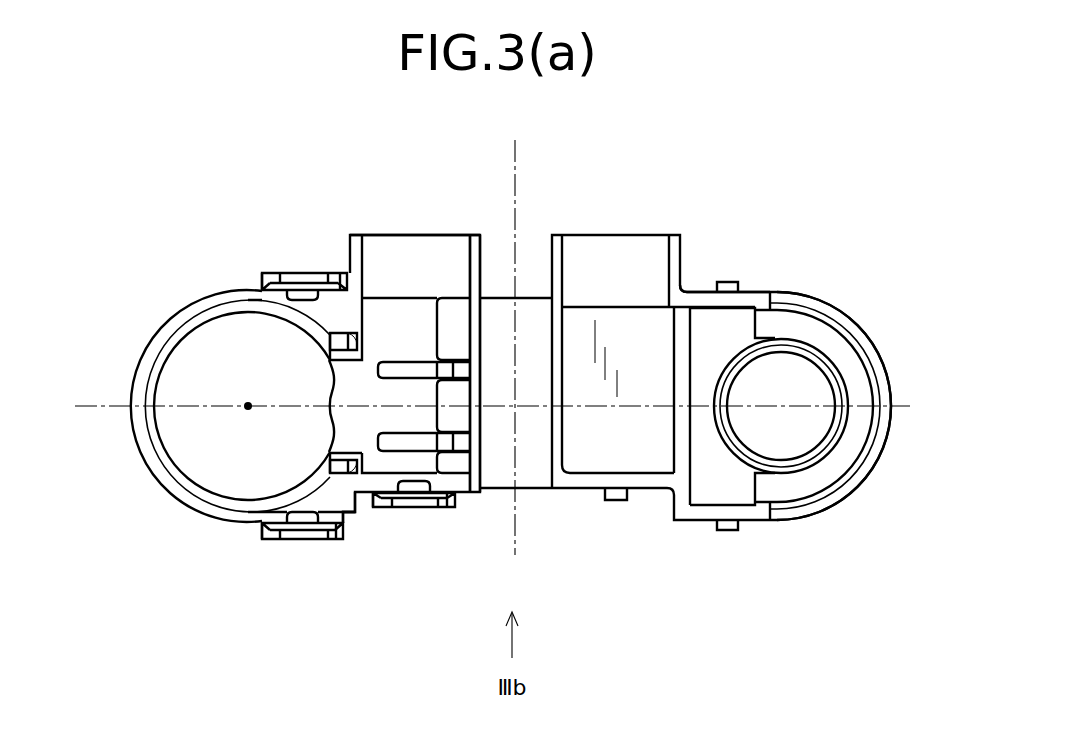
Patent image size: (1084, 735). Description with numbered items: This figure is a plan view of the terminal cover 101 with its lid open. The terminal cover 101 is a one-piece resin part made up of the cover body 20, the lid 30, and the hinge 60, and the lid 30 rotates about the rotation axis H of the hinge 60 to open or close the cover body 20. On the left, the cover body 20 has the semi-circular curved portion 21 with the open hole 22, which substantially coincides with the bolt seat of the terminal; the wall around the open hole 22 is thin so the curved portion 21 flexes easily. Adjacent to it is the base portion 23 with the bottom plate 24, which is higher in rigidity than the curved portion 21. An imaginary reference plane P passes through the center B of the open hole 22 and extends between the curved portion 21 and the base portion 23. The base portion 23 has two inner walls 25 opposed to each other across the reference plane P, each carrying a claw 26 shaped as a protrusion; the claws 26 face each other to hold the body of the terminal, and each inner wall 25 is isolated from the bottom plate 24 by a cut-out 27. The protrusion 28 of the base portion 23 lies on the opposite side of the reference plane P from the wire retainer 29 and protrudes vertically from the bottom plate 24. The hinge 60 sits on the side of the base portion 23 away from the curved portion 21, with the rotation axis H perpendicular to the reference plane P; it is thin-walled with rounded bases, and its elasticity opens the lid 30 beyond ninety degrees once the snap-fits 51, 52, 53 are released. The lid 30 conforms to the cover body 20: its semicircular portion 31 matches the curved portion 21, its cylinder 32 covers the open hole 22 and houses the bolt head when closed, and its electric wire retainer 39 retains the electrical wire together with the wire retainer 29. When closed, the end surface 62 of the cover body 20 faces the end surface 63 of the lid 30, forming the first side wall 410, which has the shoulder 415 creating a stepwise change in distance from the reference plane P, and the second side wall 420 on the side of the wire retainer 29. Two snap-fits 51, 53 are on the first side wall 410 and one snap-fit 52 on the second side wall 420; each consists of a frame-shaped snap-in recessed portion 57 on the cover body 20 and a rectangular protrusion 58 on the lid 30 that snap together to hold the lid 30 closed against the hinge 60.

The terminal cover 101 is at (822, 170).
The cover body 20 is at (194, 280).
The curved portion 21 is at (138, 449).
The open hole 22 is at (193, 457).
The base portion 23 is at (347, 384).
The bottom plate 24 is at (325, 456).
The inner wall 25 is at (357, 340).
The claw 26 is at (330, 342).
The cut-out 27 is at (332, 356).
The protrusion 28 is at (481, 484).
The wire retainer 29 is at (413, 250).
The lid 30 is at (836, 292).
The semicircular portion 31 is at (861, 478).
The cylinder 32 is at (799, 434).
The electric wire retainer 39 is at (613, 250).
The snap-fit 51 is at (289, 543).
The snap-fit 52 is at (301, 264).
The snap-fit 53 is at (416, 512).
The snap-in recessed portion 57 is at (268, 272).
The protrusion 58 is at (725, 280).
The hinge 60 is at (534, 472).
The end surface 62 is at (337, 512).
The end surface 63 is at (681, 502).
The first side wall 410 is at (707, 524).
The shoulder 415 is at (368, 508).
The second side wall 420 is at (700, 290).
The center of the open hole B is at (246, 408).
The reference plane P is at (93, 404).
The rotation axis H is at (522, 158).